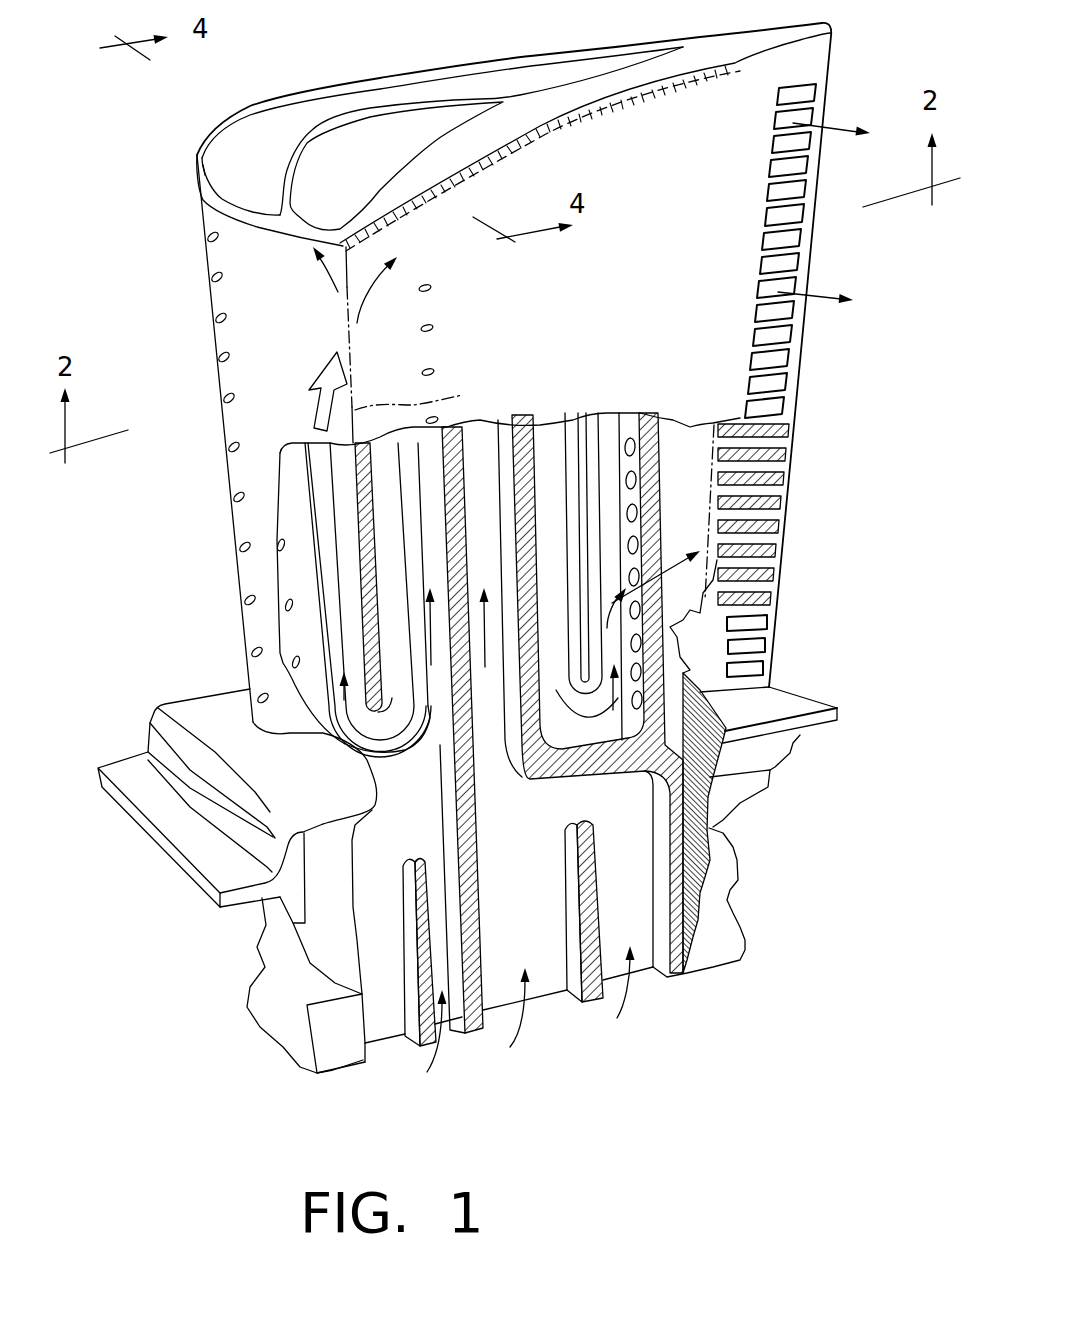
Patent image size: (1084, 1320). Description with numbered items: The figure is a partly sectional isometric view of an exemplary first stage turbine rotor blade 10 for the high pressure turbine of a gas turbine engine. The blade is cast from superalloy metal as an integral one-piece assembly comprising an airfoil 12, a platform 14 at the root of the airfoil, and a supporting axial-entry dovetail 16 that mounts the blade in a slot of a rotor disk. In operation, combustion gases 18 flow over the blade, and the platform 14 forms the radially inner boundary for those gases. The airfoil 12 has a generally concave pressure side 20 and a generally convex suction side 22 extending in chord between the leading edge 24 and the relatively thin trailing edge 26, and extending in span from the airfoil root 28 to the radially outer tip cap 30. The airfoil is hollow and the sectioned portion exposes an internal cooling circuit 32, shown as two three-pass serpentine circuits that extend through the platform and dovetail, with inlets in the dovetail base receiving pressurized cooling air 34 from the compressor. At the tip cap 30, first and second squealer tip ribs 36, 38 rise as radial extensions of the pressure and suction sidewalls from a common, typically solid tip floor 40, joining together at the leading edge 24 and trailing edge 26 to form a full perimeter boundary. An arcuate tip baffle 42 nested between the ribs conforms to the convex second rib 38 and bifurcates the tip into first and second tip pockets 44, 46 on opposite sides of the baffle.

The turbine rotor blade 10 is at (142, 256).
The airfoil 12 is at (853, 62).
The platform 14 is at (197, 694).
The dovetail 16 is at (253, 947).
The combustion gases 18 is at (307, 403).
The pressure side 20 is at (638, 314).
The suction side 22 is at (301, 339).
The leading edge 24 is at (428, 396).
The trailing edge 26 is at (815, 258).
The airfoil root 28 is at (292, 740).
The tip cap 30 is at (182, 155).
The internal cooling circuit 32 is at (530, 831).
The cooling air 34 is at (527, 1022).
The first squealer tip rib 36 is at (512, 142).
The second squealer tip rib 38 is at (328, 83).
The tip floor 40 is at (265, 135).
The tip baffle 42 is at (310, 130).
The first tip pocket 44 is at (358, 201).
The second tip pocket 46 is at (266, 176).